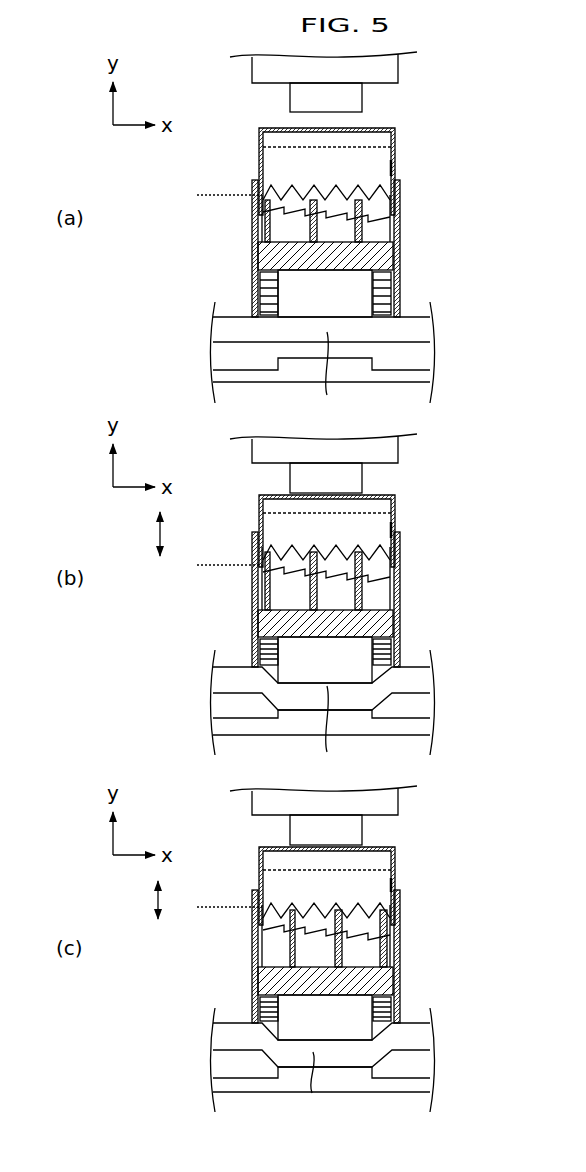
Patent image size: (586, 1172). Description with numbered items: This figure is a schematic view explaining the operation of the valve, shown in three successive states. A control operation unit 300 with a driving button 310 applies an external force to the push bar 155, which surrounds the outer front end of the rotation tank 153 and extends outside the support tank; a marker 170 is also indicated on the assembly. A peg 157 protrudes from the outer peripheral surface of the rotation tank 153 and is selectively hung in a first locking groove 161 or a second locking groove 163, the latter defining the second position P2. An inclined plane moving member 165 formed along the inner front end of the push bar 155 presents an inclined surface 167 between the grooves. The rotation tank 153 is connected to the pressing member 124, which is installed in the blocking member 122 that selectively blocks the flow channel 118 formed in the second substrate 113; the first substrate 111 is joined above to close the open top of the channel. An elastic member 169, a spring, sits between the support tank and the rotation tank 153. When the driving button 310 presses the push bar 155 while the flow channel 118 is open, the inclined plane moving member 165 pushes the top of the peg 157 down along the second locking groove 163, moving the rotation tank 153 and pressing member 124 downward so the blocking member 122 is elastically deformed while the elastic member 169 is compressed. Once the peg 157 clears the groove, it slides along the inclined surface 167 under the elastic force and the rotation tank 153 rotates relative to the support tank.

The control operation unit 300 is at (246, 74).
The driving button 310 is at (379, 99).
The push bar 155 is at (259, 143).
The marker 170 is at (396, 169).
The second locking groove 163 is at (401, 186).
The inclined surface 167 is at (260, 201).
The second position P2 is at (217, 551).
The inclined plane moving member 165 is at (270, 195).
The first locking groove 161 is at (397, 213).
The peg 157 is at (362, 229).
The rotation tank 153 is at (385, 262).
The elastic member 169 is at (385, 289).
The pressing member 124 is at (350, 301).
The first substrate 111 is at (211, 334).
The flow channel 118 is at (243, 360).
The second substrate 113 is at (244, 386).
The blocking member 122 is at (319, 725).